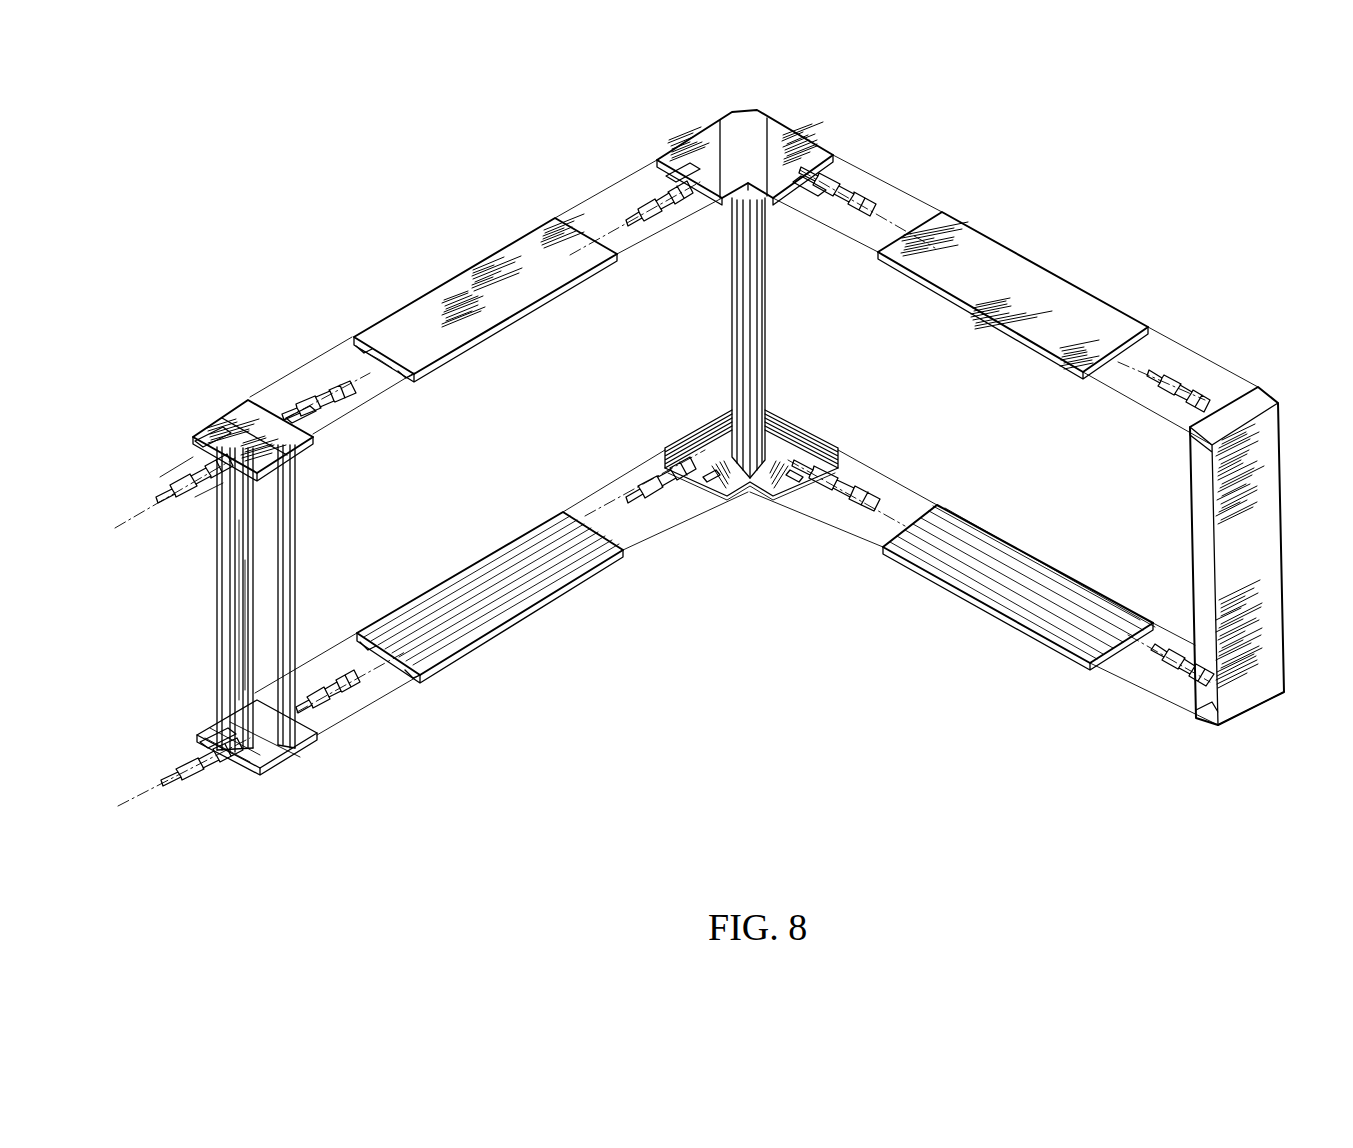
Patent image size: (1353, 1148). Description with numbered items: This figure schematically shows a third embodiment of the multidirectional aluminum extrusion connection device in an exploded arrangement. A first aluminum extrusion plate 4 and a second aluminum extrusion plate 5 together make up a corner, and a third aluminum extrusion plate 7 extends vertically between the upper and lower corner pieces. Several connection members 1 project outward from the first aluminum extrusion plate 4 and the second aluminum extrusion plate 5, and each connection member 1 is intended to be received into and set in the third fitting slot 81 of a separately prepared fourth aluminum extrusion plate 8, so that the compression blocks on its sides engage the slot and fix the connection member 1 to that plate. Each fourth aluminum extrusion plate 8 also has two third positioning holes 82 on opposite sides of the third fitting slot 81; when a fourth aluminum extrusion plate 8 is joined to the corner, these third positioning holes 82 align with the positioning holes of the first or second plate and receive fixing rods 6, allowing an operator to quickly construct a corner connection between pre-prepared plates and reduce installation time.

The connection member 1 is at (836, 185).
The first aluminum extrusion plate 4 is at (697, 152).
The second aluminum extrusion plate 5 is at (795, 160).
The fixing rod 6 is at (830, 186).
The third aluminum extrusion plate 7 is at (749, 138).
The fourth aluminum extrusion plate 8 is at (440, 297).
The third fitting slot 81 is at (380, 360).
The third positioning hole 82 is at (355, 350).